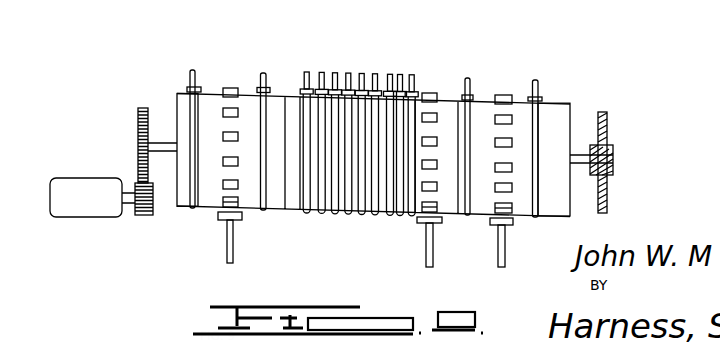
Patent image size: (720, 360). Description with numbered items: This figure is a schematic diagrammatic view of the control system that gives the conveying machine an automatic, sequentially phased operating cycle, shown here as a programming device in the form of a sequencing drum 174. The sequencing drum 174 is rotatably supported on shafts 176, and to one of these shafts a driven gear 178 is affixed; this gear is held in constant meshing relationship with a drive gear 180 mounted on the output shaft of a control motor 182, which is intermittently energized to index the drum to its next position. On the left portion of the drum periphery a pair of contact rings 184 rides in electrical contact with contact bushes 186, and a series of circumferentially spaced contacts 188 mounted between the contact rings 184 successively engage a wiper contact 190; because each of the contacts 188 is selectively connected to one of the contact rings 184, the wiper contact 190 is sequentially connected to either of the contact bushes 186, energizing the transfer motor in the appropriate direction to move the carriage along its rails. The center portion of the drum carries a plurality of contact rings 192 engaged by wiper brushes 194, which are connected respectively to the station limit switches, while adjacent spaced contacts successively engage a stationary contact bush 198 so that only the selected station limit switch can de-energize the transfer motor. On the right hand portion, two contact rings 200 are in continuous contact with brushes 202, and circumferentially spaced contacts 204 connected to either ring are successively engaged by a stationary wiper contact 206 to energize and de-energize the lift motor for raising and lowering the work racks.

The sequencing drum 174 is at (580, 102).
The shafts 176 is at (162, 142).
The driven gear 178 is at (138, 124).
The drive gear 180 is at (136, 186).
The control motor 182 is at (67, 208).
The contact rings 184 is at (256, 103).
The contact bushes 186 is at (191, 69).
The contacts 188 is at (221, 184).
The wiper contact 190 is at (226, 249).
The contact rings 192 is at (330, 215).
The wiper brushes 194 is at (340, 74).
The stationary contact bush 198 is at (426, 257).
The contact rings 200 is at (532, 108).
The brushes 202 is at (473, 84).
The contacts 204 is at (512, 167).
The stationary wiper contact 206 is at (502, 262).